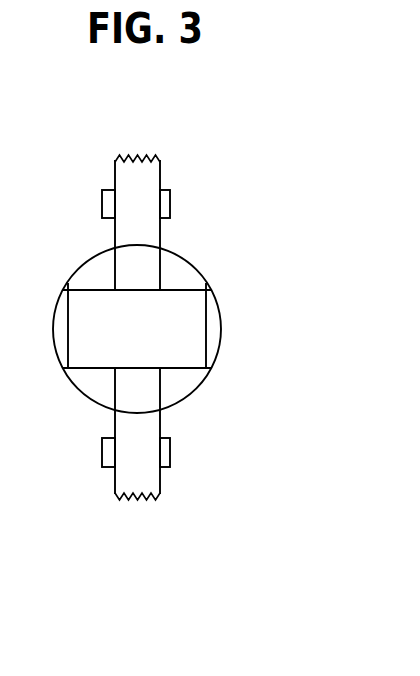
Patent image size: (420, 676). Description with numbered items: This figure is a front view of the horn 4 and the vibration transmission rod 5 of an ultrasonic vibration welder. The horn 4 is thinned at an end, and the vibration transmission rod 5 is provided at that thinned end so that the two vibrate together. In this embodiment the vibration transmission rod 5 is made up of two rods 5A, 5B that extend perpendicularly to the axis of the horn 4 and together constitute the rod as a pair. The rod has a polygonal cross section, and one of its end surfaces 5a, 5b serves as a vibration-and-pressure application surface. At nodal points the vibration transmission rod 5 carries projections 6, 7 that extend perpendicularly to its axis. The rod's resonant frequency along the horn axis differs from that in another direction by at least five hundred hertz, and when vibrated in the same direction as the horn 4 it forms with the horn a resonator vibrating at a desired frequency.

The horn 4 is at (200, 273).
The vibration transmission rod 5 is at (175, 329).
The rod 5A is at (160, 172).
The rod 5B is at (152, 427).
The end surface 5a is at (143, 157).
The end surface 5b is at (137, 500).
The projection 6 is at (108, 208).
The projection 7 is at (104, 462).